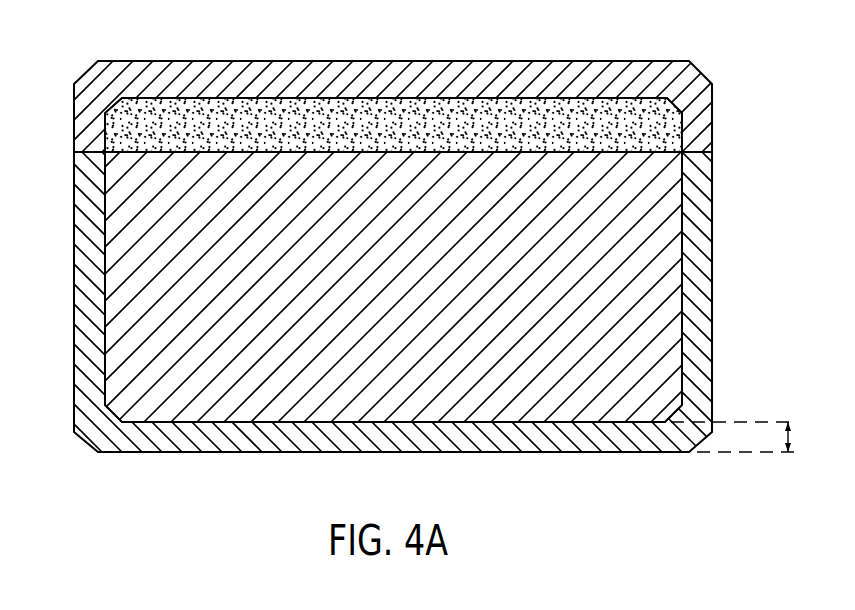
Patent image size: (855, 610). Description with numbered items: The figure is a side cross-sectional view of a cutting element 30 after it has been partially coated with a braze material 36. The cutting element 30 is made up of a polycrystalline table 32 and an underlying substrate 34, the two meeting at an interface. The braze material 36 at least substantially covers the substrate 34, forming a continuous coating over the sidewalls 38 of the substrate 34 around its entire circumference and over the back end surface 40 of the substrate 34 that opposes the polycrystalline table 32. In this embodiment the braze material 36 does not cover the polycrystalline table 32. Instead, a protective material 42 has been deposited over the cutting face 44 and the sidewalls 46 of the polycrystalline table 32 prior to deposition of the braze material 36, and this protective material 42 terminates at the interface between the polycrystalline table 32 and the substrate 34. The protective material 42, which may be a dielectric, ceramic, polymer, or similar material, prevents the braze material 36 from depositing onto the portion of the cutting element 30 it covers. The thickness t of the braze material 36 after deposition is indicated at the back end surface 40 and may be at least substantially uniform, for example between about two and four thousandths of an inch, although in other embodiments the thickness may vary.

The cutting element 30 is at (427, 260).
The polycrystalline table 32 is at (678, 132).
The substrate 34 is at (673, 200).
The braze material 36 is at (82, 190).
The sidewalls of the substrate 38 is at (117, 257).
The back end surface 40 is at (563, 443).
The protective material 42 is at (80, 98).
The cutting face 44 is at (511, 72).
The sidewalls of the polycrystalline table 46 is at (110, 127).